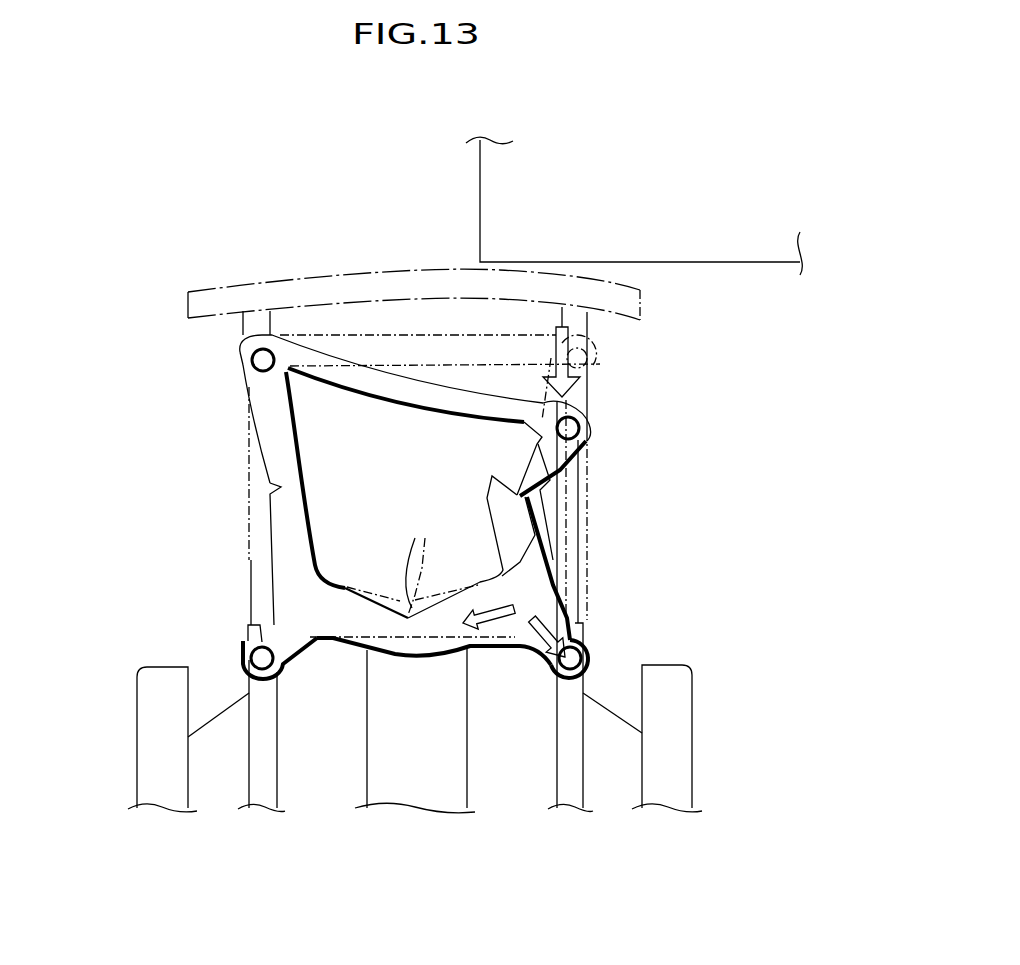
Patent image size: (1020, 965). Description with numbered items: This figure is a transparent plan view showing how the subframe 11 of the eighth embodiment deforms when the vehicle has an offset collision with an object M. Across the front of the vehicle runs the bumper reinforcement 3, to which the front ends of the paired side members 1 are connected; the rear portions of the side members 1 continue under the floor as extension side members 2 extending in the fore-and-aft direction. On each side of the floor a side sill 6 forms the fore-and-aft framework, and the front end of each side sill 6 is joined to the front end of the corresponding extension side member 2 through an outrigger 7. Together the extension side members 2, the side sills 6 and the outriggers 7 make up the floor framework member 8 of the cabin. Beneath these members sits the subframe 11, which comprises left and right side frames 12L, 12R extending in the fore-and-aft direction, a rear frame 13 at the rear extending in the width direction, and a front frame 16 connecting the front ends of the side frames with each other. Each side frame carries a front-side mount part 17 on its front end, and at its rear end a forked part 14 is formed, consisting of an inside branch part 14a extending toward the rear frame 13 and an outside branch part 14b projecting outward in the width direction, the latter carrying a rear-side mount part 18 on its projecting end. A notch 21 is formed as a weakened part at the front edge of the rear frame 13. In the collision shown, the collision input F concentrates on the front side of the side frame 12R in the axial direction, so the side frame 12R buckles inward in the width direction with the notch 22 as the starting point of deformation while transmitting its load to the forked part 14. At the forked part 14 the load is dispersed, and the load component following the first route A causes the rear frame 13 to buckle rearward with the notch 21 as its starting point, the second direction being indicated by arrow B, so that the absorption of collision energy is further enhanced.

The object M is at (477, 157).
The bumper reinforcement 3 is at (423, 272).
The front frame 16 is at (380, 377).
The collision input F is at (556, 370).
The front-side mount part 17 is at (240, 351).
The subframe 11 is at (250, 440).
The side frame 12L is at (290, 440).
The side frame 12R is at (492, 477).
The side member 1 is at (249, 473).
The notch 22 is at (272, 490).
The notch 21 is at (413, 563).
The inside branch part 14a is at (340, 612).
The forked part 14 is at (288, 597).
The rear-side mount part 18 is at (249, 657).
The outrigger 7 is at (222, 670).
The first route A is at (480, 623).
The movement direction B is at (547, 620).
The floor framework member 8 is at (128, 726).
The side sill 6 is at (137, 769).
The outside branch part 14b is at (290, 650).
The rear frame 13 is at (405, 660).
The extension side member 2 is at (278, 785).